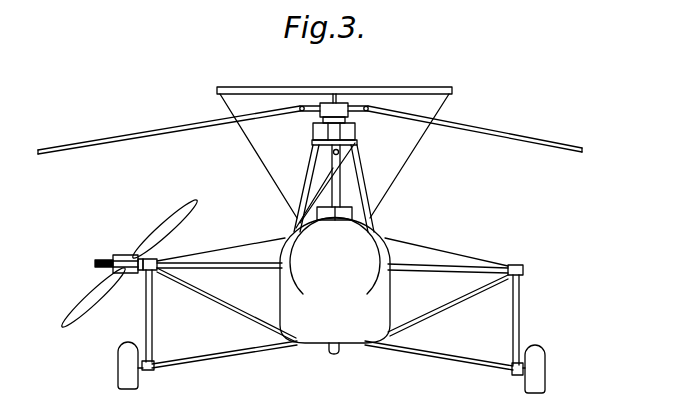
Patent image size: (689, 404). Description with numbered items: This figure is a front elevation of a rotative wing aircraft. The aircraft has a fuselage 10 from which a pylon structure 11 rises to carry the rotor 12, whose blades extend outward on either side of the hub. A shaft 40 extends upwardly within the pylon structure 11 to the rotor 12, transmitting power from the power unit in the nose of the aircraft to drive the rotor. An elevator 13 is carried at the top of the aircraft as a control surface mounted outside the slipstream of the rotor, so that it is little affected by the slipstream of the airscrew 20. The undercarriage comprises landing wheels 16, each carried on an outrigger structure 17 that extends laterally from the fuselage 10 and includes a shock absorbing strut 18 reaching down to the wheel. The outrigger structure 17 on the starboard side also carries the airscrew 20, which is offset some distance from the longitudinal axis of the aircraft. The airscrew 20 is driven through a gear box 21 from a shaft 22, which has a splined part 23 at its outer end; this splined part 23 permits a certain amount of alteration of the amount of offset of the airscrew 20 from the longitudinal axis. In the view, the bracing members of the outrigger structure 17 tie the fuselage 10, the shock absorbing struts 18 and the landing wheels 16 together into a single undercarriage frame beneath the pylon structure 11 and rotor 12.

The fuselage 10 is at (335, 285).
The pylon structure 11 is at (366, 173).
The rotor 12 is at (334, 112).
The elevator 13 is at (300, 92).
The landing wheels 16 is at (128, 370).
The outrigger structure 17 is at (210, 252).
The shock absorbing strut 18 is at (146, 316).
The airscrew 20 is at (183, 215).
The gear box 21 is at (133, 257).
The shaft 22 is at (255, 270).
The splined part 23 is at (108, 265).
The shaft 40 is at (335, 197).